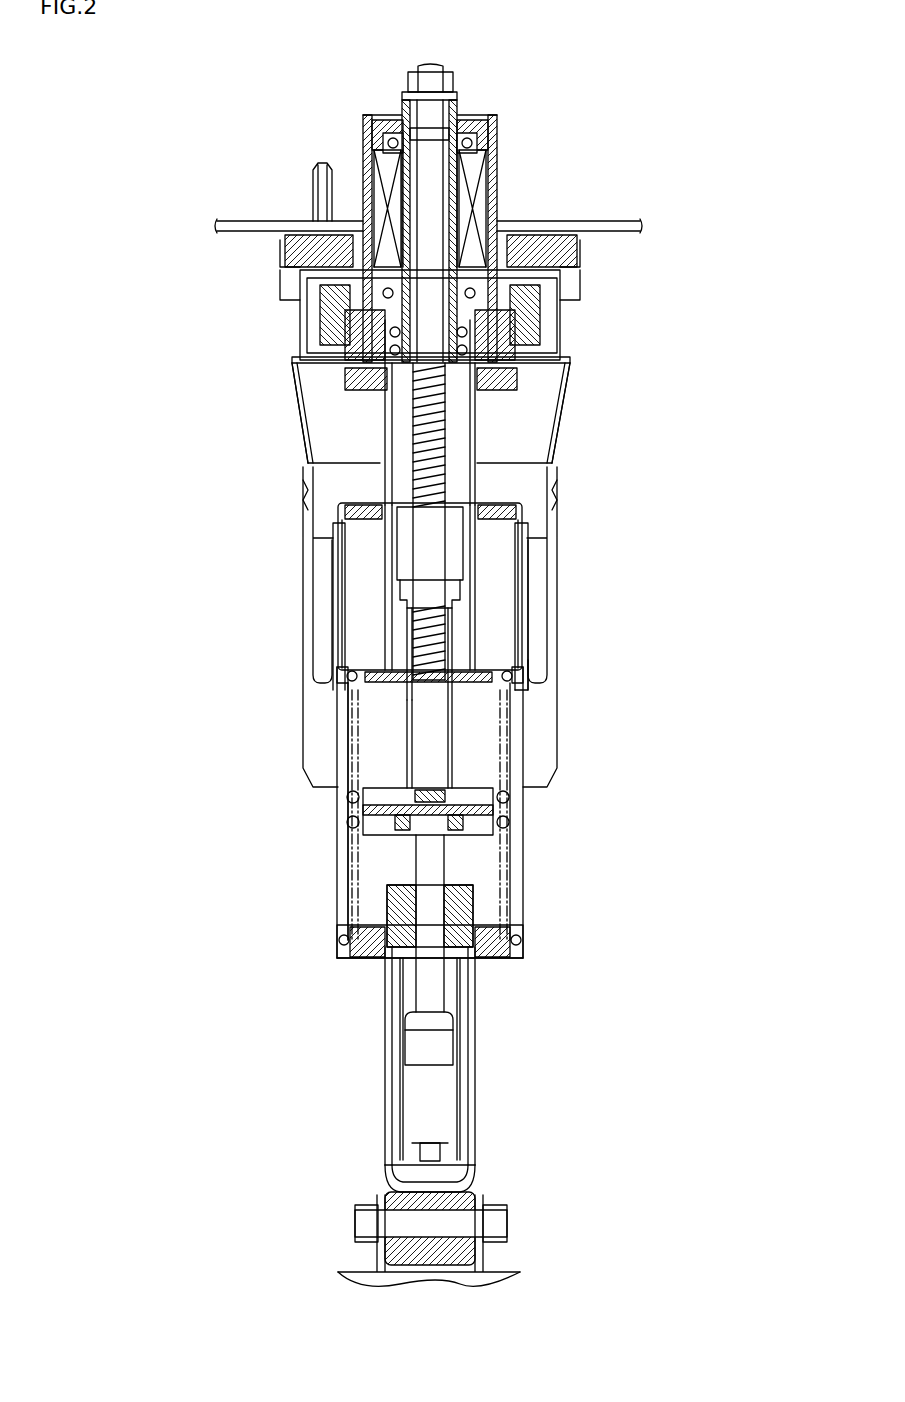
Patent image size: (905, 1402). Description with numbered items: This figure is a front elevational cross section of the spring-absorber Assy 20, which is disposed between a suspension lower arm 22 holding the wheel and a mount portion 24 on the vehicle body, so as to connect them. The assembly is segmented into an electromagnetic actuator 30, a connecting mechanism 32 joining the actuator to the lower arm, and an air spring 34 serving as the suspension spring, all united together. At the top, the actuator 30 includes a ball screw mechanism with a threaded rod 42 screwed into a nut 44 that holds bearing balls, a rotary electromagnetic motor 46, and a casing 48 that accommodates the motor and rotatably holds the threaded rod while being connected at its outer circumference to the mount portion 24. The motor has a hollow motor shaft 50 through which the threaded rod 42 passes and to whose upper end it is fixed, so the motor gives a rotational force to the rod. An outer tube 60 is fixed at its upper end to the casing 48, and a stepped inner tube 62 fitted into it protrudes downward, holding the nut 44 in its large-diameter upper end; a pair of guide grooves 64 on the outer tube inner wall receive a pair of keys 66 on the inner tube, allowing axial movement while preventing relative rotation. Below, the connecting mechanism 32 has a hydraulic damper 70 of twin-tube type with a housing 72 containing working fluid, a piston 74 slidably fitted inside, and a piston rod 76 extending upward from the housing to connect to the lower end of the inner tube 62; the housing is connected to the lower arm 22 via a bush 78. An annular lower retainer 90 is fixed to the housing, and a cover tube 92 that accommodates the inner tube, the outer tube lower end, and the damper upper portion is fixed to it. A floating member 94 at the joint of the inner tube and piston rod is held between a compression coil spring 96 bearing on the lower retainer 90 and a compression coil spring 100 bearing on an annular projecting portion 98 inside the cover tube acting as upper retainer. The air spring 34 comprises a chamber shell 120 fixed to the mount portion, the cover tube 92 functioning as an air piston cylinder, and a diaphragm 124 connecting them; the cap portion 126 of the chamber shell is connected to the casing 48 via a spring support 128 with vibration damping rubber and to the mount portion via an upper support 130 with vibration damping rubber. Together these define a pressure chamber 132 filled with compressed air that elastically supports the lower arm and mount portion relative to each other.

The spring-absorber Assy 20 is at (632, 94).
The suspension lower arm 22 is at (515, 1275).
The mount portion 24 is at (560, 205).
The electromagnetic actuator 30 is at (340, 435).
The connecting mechanism 32 is at (312, 996).
The air spring 34 is at (578, 492).
The threaded rod 42 is at (418, 435).
The nut 44 is at (418, 535).
The electromagnetic motor 46 is at (482, 100).
The casing 48 is at (497, 148).
The motor shaft 50 is at (470, 183).
The outer tube 60 is at (385, 598).
The inner tube 62 is at (408, 720).
The guide grooves 64 is at (398, 640).
The keys 66 is at (385, 560).
The hydraulic damper 70 is at (362, 1082).
The housing 72 is at (387, 988).
The piston 74 is at (408, 1045).
The piston rod 76 is at (425, 870).
The bush 78 is at (480, 1190).
The lower retainer 90 is at (490, 958).
The cover tube 92 is at (522, 908).
The floating member 94 is at (472, 815).
The compression coil spring 96 is at (352, 893).
The annular projecting portion 98 is at (512, 663).
The compression coil spring 100 is at (352, 758).
The chamber shell 120 is at (592, 378).
The diaphragm 124 is at (547, 672).
The cap portion 126 is at (565, 315).
The spring support 128 is at (527, 368).
The upper support 130 is at (592, 251).
The pressure chamber 132 is at (540, 568).